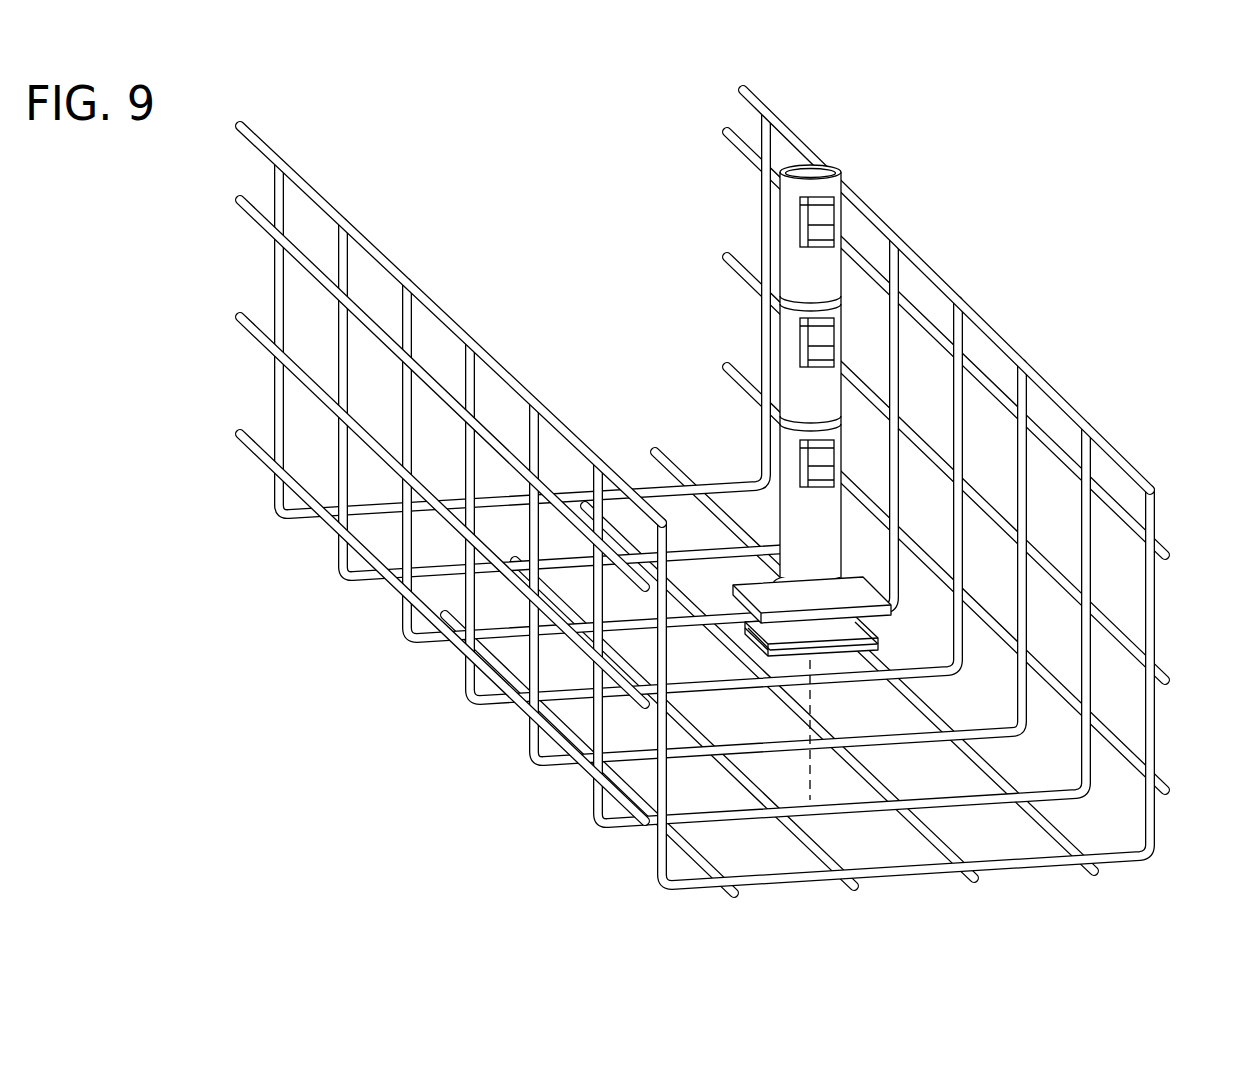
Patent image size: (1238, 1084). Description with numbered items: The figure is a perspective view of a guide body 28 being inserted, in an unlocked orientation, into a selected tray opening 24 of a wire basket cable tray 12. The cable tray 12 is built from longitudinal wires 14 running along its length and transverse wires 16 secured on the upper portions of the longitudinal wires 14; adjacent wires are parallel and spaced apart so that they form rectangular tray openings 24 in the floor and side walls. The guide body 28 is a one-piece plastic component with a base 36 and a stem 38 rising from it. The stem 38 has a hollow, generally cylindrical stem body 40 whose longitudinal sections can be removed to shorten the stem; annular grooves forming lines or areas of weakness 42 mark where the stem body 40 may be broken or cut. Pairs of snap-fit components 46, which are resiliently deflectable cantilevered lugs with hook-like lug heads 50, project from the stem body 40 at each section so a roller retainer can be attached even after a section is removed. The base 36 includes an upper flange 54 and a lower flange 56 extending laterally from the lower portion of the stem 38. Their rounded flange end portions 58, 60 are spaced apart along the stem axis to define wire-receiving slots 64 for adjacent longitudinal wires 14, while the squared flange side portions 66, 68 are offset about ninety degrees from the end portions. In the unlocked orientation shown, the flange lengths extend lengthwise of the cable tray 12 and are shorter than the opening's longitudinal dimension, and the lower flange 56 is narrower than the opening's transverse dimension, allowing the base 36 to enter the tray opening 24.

The wire basket cable tray 12 is at (1101, 325).
The longitudinal wires 14 is at (907, 827).
The transverse wires 16 is at (913, 735).
The tray openings 24 is at (772, 770).
The guide body 28 is at (855, 333).
The base 36 is at (866, 550).
The stem 38 is at (777, 513).
The stem body 40 is at (797, 383).
The lines or areas of weakness 42 is at (797, 302).
The snap-fit components 46 is at (815, 235).
The lug heads 50 is at (830, 205).
The upper flange 54 is at (894, 610).
The lower flange 56 is at (882, 651).
The flange end portions of the upper flange 58 is at (847, 622).
The flange end portions of the lower flange 60 is at (825, 631).
The wire-receiving slots 64 is at (803, 632).
The flange side portions of the upper flange 66 is at (872, 592).
The flange side portions of the lower flange 68 is at (762, 625).